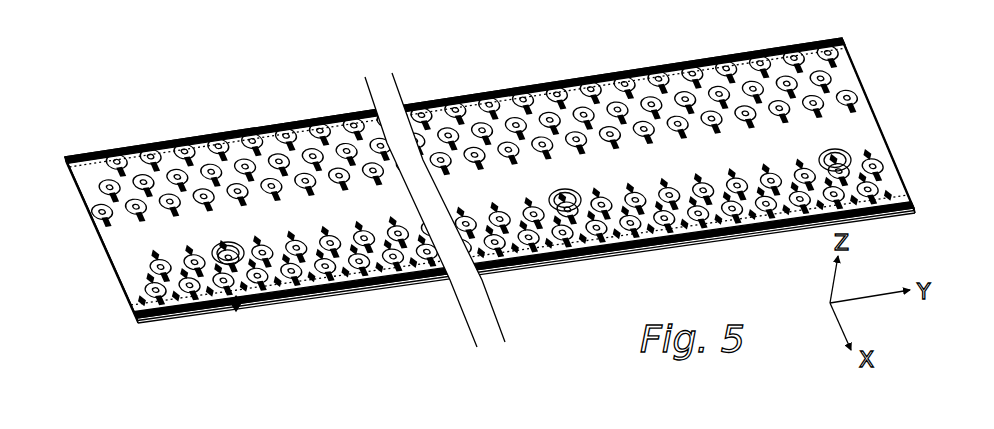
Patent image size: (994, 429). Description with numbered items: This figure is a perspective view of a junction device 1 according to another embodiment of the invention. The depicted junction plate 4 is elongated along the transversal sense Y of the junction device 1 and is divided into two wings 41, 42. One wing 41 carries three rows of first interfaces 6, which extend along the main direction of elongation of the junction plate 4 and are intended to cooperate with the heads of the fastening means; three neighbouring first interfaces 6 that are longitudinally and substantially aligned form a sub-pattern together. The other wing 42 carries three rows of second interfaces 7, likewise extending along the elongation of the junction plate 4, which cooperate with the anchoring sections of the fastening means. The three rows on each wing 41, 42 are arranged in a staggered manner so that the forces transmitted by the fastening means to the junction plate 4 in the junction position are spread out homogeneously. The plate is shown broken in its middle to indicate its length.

The junction device 1 is at (466, 190).
The junction plate 4 is at (466, 200).
The wing 41 is at (66, 156).
The wing 42 is at (70, 187).
The first interface 6 is at (147, 142).
The second interface 7 is at (233, 311).